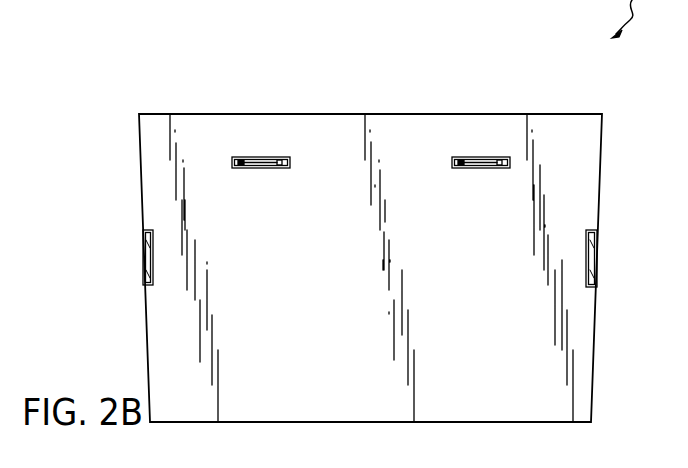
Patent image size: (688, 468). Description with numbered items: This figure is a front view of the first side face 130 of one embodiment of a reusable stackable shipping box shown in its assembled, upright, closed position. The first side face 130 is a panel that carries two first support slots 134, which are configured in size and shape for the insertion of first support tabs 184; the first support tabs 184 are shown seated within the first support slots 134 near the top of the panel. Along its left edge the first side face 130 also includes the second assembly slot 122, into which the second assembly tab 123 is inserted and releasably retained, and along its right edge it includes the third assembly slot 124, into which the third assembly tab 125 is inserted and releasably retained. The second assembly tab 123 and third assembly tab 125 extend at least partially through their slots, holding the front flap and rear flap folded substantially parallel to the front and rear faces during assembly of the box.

The first side face 130 is at (331, 296).
The first support slots 134 is at (258, 167).
The first support tabs 184 is at (262, 158).
The second assembly slot 122 is at (153, 282).
The second assembly tab 123 is at (143, 262).
The third assembly slot 124 is at (587, 240).
The third assembly tab 125 is at (597, 266).